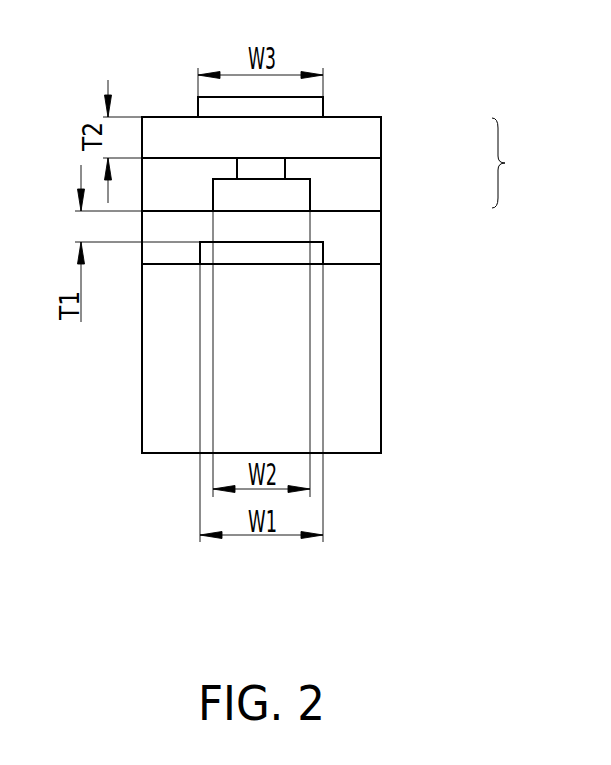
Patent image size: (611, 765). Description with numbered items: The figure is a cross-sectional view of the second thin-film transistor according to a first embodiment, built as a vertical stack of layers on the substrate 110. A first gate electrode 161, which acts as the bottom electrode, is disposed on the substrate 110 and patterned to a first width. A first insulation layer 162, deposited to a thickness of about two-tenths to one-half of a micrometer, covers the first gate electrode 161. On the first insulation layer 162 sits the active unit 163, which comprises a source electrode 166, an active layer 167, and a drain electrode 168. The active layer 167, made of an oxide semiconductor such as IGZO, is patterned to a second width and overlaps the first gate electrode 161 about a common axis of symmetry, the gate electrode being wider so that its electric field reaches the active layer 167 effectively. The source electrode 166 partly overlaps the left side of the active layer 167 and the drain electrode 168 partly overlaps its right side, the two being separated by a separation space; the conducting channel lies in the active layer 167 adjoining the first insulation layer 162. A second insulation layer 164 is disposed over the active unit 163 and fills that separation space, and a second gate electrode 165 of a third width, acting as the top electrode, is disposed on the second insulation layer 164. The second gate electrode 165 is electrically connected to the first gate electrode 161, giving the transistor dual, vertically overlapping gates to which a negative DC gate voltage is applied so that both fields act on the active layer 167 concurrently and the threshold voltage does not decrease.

The substrate 110 is at (363, 360).
The first gate electrode 161 is at (305, 253).
The first insulation layer 162 is at (362, 243).
The active unit 163 is at (527, 163).
The second insulation layer 164 is at (190, 128).
The second gate electrode 165 is at (315, 108).
The source electrode 166 is at (228, 172).
The active layer 167 is at (282, 190).
The drain electrode 168 is at (363, 207).